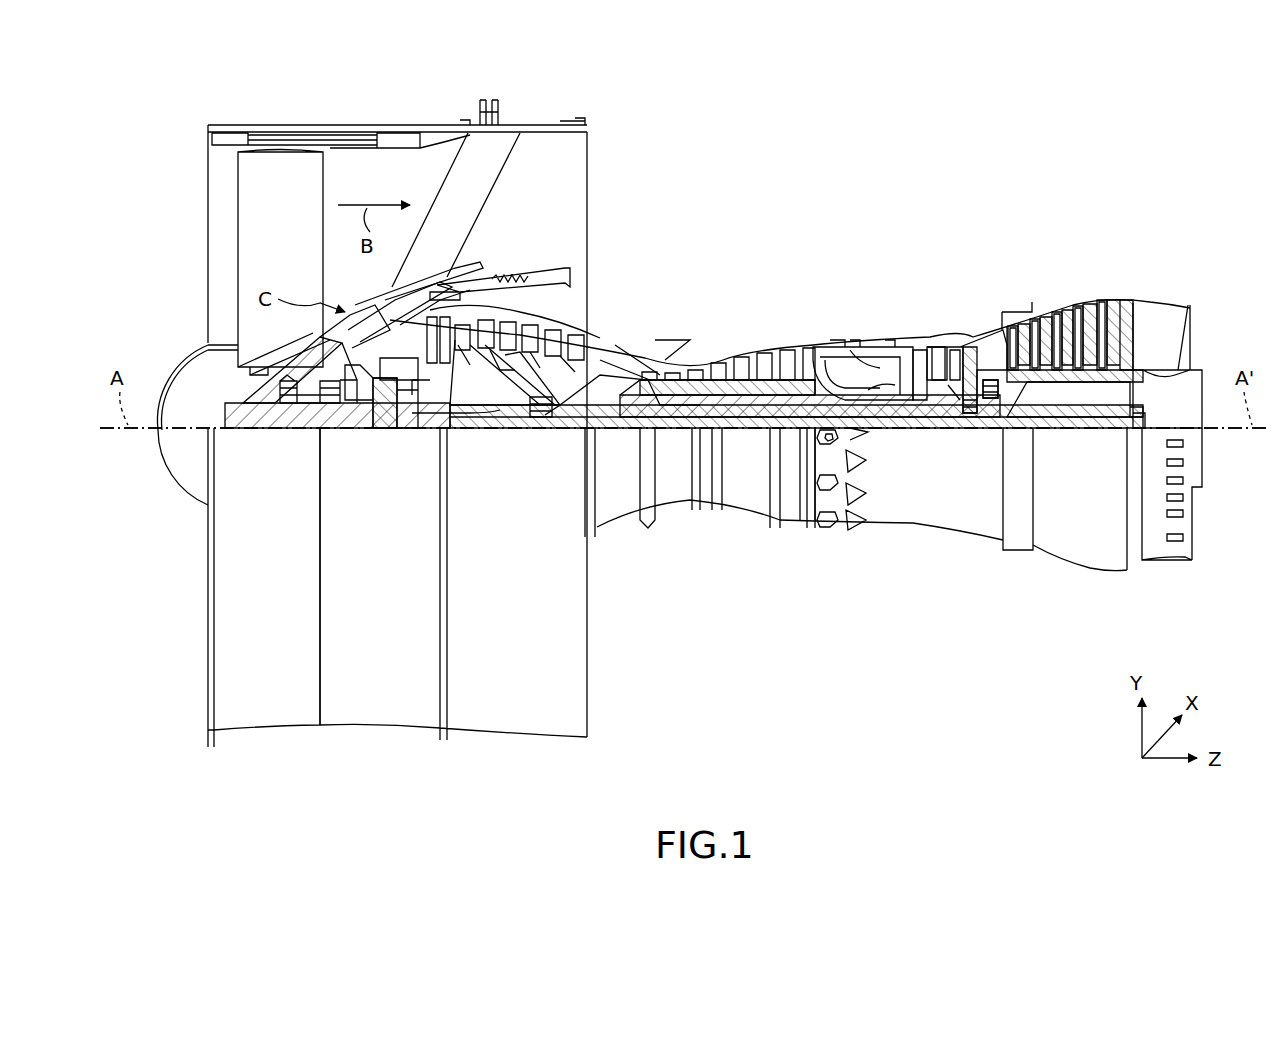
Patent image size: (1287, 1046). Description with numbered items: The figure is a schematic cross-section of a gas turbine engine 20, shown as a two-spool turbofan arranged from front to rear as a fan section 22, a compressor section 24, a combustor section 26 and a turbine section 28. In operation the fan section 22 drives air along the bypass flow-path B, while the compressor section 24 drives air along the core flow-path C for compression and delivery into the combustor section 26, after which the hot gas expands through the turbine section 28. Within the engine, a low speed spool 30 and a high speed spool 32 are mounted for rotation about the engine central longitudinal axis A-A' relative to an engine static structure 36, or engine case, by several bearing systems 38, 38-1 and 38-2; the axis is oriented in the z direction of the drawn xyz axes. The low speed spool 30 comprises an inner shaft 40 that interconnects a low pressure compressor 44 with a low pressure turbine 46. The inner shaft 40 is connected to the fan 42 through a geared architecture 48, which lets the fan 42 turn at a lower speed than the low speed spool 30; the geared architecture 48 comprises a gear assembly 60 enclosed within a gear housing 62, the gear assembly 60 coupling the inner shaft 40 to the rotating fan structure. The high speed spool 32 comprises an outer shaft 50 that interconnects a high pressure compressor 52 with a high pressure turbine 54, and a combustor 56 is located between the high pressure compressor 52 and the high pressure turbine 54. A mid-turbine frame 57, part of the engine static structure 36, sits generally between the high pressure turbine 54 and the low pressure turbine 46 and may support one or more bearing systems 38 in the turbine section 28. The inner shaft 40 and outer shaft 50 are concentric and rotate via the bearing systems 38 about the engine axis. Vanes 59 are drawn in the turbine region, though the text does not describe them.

The gas turbine engine 20 is at (913, 160).
The fan section 22 is at (442, 102).
The compressor section 24 is at (450, 233).
The combustor section 26 is at (922, 233).
The turbine section 28 is at (1132, 233).
The low speed spool 30 is at (751, 445).
The high speed spool 32 is at (790, 400).
The engine static structure 36 is at (377, 712).
The bearing system 38 is at (985, 420).
The bearing system 38-1 is at (293, 405).
The bearing system 38-2 is at (538, 415).
The inner shaft 40 is at (607, 430).
The fan 42 is at (290, 249).
The low pressure compressor 44 is at (520, 335).
The low pressure turbine 46 is at (1067, 317).
The geared architecture 48 is at (406, 448).
The outer shaft 50 is at (858, 413).
The high pressure compressor 52 is at (735, 400).
The high pressure turbine 54 is at (937, 345).
The combustor 56 is at (870, 365).
The mid-turbine frame 57 is at (980, 337).
The vanes 59 is at (990, 330).
The gear assembly 60 is at (412, 413).
The gear housing 62 is at (412, 390).